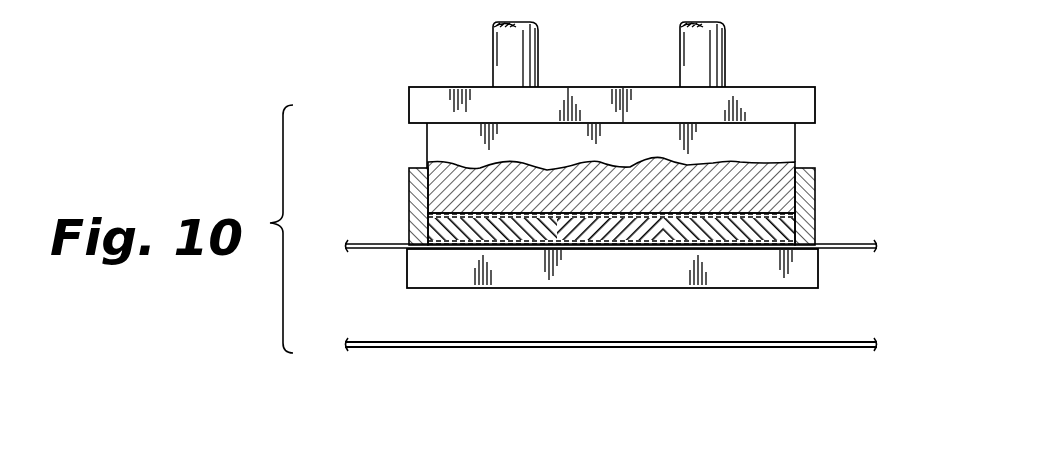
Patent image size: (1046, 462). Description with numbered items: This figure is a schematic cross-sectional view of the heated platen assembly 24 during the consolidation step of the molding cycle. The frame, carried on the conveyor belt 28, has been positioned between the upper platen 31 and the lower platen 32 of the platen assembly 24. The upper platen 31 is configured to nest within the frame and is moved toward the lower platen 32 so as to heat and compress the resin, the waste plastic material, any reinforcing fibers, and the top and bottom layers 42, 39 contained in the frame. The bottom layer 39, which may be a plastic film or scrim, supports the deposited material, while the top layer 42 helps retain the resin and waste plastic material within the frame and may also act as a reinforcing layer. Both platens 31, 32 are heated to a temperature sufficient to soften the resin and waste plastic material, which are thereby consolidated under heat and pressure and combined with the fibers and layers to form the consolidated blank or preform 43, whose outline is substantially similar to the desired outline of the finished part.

The platen assembly 24 is at (390, 112).
The upper platen 31 is at (797, 160).
The top layer 42 is at (816, 182).
The preform 43 is at (407, 233).
The bottom layer 39 is at (747, 249).
The lower platen 32 is at (407, 272).
The conveyor belt 28 is at (510, 342).